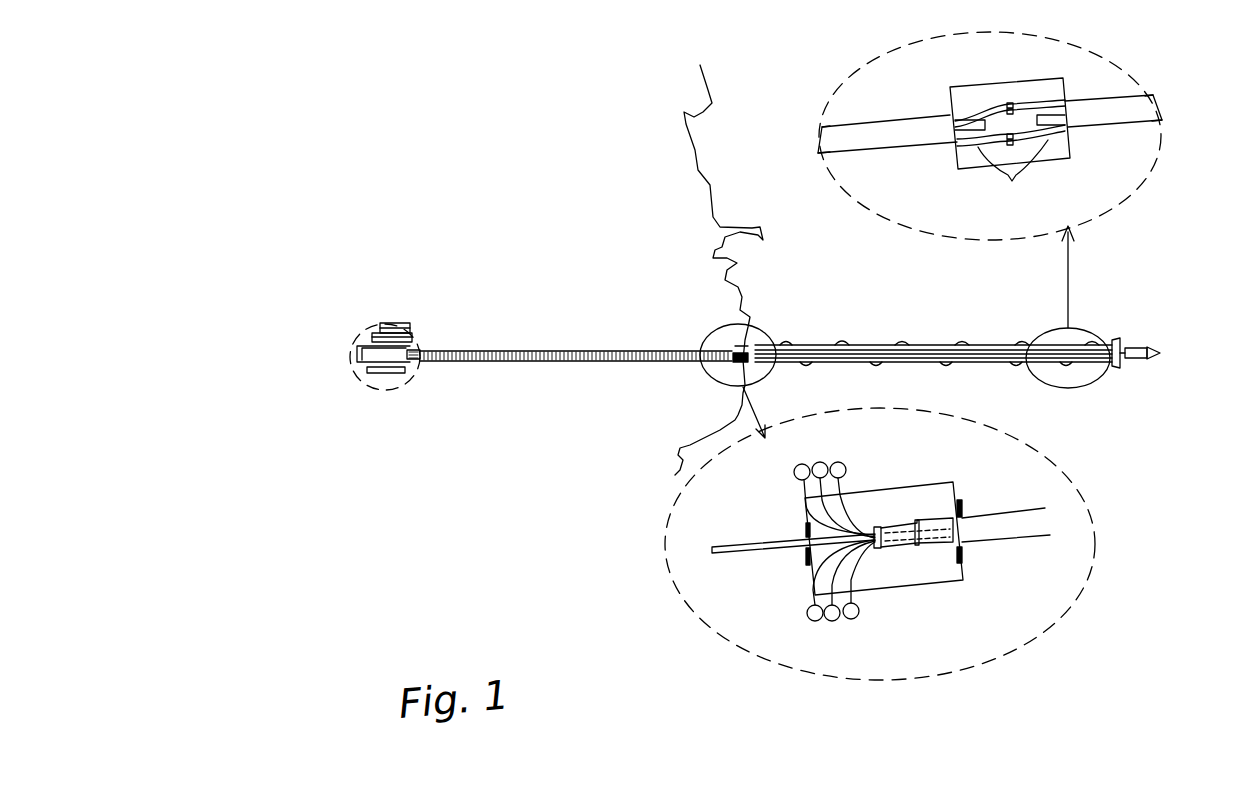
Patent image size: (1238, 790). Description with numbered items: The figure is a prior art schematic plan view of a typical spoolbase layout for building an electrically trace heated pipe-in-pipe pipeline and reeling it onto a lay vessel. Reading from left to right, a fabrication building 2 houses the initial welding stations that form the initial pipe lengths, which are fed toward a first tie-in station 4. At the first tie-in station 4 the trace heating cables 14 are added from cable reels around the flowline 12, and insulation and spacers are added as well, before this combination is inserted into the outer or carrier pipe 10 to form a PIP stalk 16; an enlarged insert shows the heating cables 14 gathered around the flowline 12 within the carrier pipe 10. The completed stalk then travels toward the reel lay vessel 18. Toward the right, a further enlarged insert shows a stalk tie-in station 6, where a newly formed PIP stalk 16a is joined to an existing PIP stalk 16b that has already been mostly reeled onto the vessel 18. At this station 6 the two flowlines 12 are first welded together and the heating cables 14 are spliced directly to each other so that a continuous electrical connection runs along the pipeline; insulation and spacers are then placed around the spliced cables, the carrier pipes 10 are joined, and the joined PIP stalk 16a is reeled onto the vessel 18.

The fabrication building 2 is at (358, 340).
The first tie-in station 4 is at (700, 372).
The stalk tie-in station 6 is at (1085, 387).
The outer or carrier pipe 10 is at (910, 155).
The flowline 12 is at (958, 128).
The trace heating cables 14 is at (760, 622).
The PIP stalk 16 is at (895, 345).
The newly formed PIP stalk 16a is at (840, 155).
The existing PIP stalk 16b is at (1140, 130).
The reel lay vessel 18 is at (1140, 360).